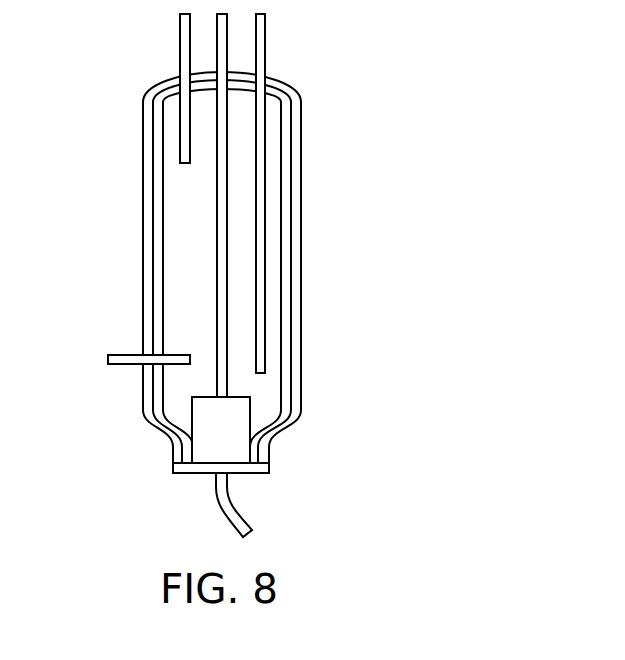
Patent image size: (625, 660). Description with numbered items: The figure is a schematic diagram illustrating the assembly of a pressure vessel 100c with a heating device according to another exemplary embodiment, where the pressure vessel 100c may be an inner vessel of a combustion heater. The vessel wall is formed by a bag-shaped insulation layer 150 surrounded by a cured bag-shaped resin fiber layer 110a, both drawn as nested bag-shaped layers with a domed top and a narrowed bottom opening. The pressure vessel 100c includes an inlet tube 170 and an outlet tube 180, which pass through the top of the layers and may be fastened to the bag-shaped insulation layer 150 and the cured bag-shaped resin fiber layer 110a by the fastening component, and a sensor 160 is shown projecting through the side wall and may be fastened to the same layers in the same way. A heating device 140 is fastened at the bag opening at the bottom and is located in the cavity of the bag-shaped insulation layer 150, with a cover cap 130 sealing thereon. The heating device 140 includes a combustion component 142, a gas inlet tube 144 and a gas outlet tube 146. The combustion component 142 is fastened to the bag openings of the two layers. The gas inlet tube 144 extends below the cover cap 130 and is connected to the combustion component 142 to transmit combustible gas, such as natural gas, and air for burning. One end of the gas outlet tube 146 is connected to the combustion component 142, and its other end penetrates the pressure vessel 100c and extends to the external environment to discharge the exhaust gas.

The pressure vessel 100c is at (316, 293).
The cured bag-shaped resin fiber layer 110a is at (300, 165).
The cover cap 130 is at (187, 470).
The heating device 140 is at (315, 275).
The combustion component 142 is at (233, 448).
The gas inlet tube 144 is at (299, 505).
The gas outlet tube 146 is at (222, 381).
The bag-shaped insulation layer 150 is at (283, 330).
The sensor 160 is at (122, 365).
The inlet tube 170 is at (262, 227).
The outlet tube 180 is at (185, 137).